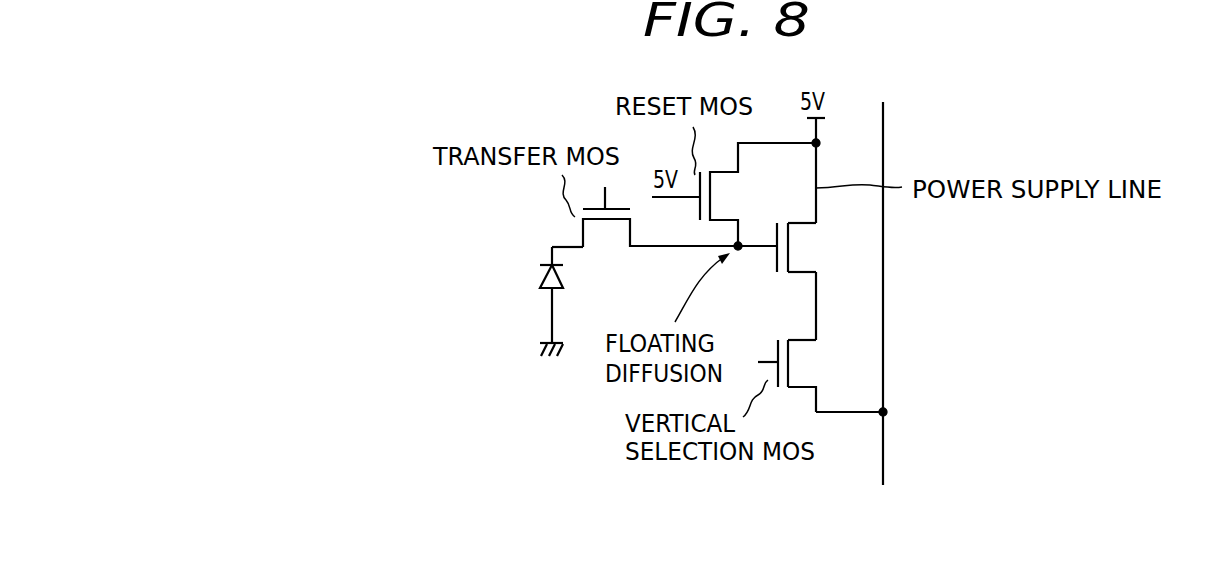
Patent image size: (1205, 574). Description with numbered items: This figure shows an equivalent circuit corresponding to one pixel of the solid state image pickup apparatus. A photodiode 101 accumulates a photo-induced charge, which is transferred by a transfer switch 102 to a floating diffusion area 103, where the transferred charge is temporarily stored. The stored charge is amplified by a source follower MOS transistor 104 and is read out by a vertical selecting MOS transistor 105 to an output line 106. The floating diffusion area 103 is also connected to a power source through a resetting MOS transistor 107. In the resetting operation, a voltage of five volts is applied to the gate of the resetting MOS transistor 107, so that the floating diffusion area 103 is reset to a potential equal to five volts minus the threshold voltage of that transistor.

The photodiode 101 is at (542, 287).
The transfer switch 102 is at (612, 237).
The floating diffusion area 103 is at (740, 252).
The source follower MOS transistor 104 is at (800, 250).
The vertical selecting MOS transistor 105 is at (800, 368).
The output line 106 is at (883, 328).
The resetting MOS transistor 107 is at (720, 198).